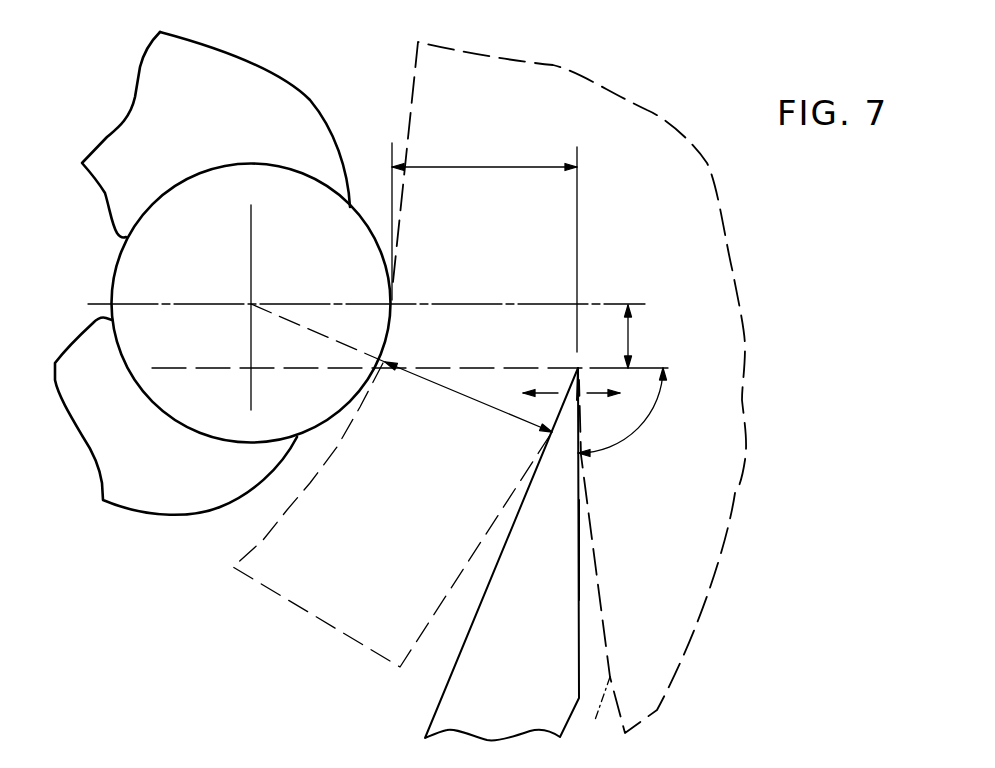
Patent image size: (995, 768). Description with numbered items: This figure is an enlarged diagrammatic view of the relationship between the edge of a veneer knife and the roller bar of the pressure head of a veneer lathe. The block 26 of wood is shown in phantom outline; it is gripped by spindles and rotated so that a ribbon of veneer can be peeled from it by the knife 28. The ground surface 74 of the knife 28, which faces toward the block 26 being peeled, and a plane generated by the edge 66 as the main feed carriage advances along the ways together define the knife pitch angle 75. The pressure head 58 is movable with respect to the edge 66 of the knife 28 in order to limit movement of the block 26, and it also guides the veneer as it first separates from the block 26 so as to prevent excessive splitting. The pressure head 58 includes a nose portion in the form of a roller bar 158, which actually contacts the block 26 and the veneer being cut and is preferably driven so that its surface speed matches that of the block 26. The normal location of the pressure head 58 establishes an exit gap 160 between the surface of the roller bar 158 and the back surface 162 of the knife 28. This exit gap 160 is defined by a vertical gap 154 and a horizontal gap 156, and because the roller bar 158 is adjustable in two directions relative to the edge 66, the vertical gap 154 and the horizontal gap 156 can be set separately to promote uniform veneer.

The block of wood 26 is at (569, 395).
The knife 28 is at (545, 631).
The pressure head 58 is at (298, 87).
The edge 66 is at (577, 366).
The ground surface 74 is at (580, 550).
The knife pitch angle 75 is at (633, 433).
The vertical gap 154 is at (628, 337).
The horizontal gap 156 is at (485, 165).
The roller bar 158 is at (115, 263).
The exit gap 160 is at (450, 390).
The back surface 162 is at (460, 653).